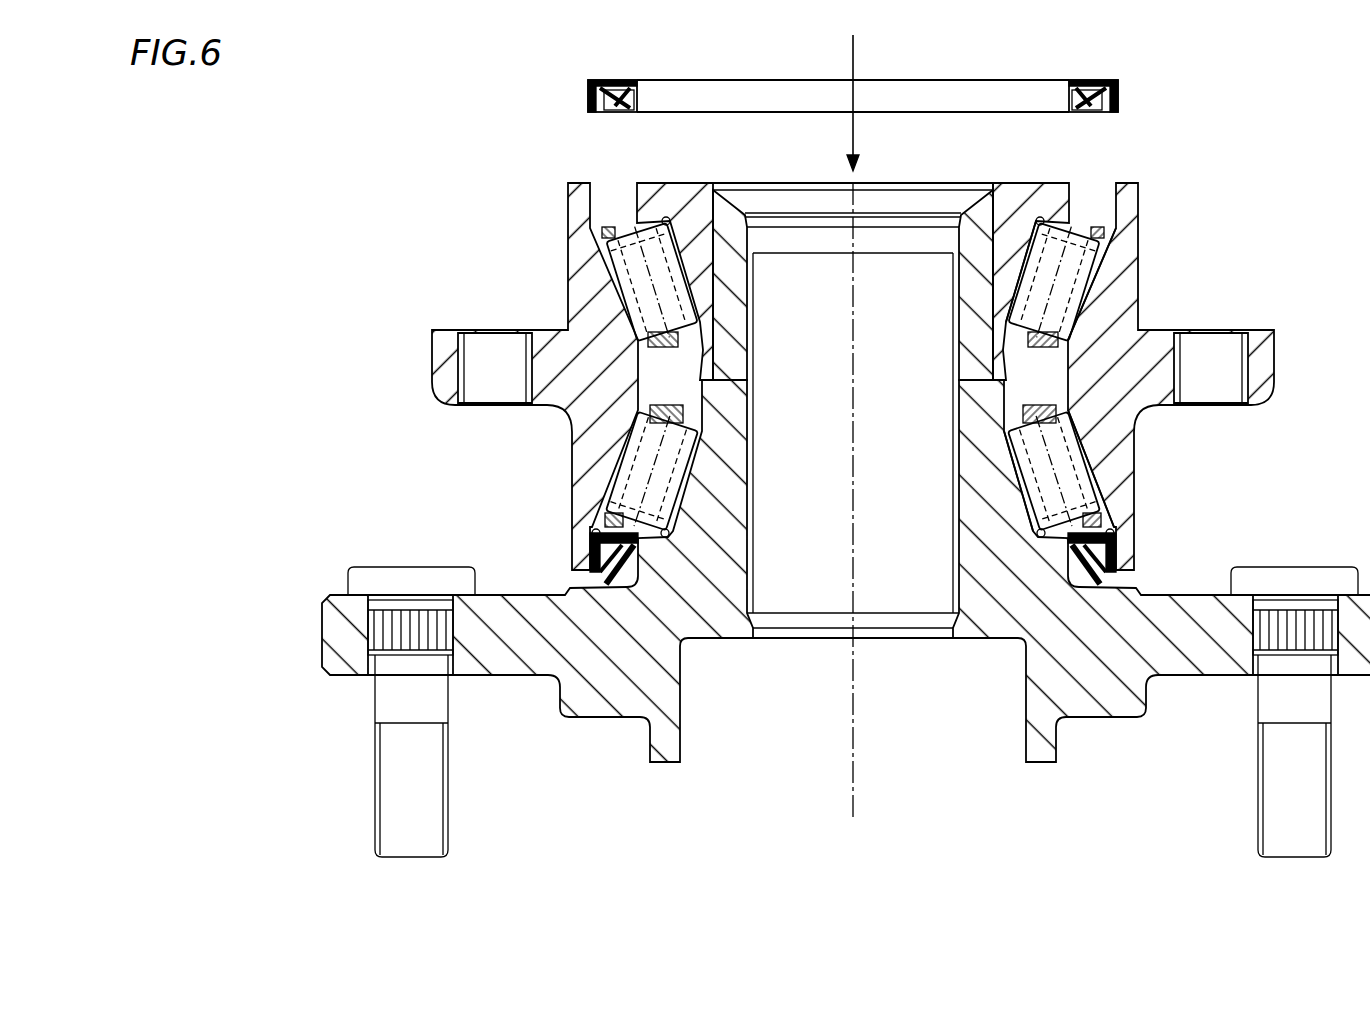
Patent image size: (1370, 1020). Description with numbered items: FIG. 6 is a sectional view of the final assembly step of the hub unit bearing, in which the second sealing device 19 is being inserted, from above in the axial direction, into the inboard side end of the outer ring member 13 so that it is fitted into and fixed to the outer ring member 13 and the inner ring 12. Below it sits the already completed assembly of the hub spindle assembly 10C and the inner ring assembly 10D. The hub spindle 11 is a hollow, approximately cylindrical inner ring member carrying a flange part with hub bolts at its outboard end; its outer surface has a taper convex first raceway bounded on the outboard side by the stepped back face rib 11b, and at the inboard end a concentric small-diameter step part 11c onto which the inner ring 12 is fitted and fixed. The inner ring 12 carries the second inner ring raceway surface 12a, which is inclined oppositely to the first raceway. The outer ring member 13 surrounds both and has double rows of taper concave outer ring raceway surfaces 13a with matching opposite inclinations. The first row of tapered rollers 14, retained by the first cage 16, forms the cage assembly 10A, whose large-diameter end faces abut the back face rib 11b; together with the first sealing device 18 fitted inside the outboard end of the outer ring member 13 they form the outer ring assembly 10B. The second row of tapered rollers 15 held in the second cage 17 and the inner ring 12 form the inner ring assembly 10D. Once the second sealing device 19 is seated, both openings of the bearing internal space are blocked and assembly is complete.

The cage assembly 10A is at (381, 428).
The outer ring assembly 10B is at (319, 343).
The hub spindle assembly 10C is at (247, 433).
The inner ring assembly 10D is at (507, 185).
The hub spindle 11 is at (322, 634).
The back face rib 11b is at (1052, 530).
The small-diameter step part 11c is at (996, 205).
The inner ring 12 is at (652, 197).
The second inner ring raceway surface 12a is at (1062, 318).
The outer ring member 13 is at (430, 357).
The outer ring raceway surfaces 13a is at (1088, 266).
The first row of tapered rollers 14 is at (618, 470).
The second row of tapered rollers 15 is at (640, 293).
The first cage 16 is at (626, 463).
The second cage 17 is at (604, 233).
The first sealing device 18 is at (598, 540).
The second sealing device 19 is at (590, 93).